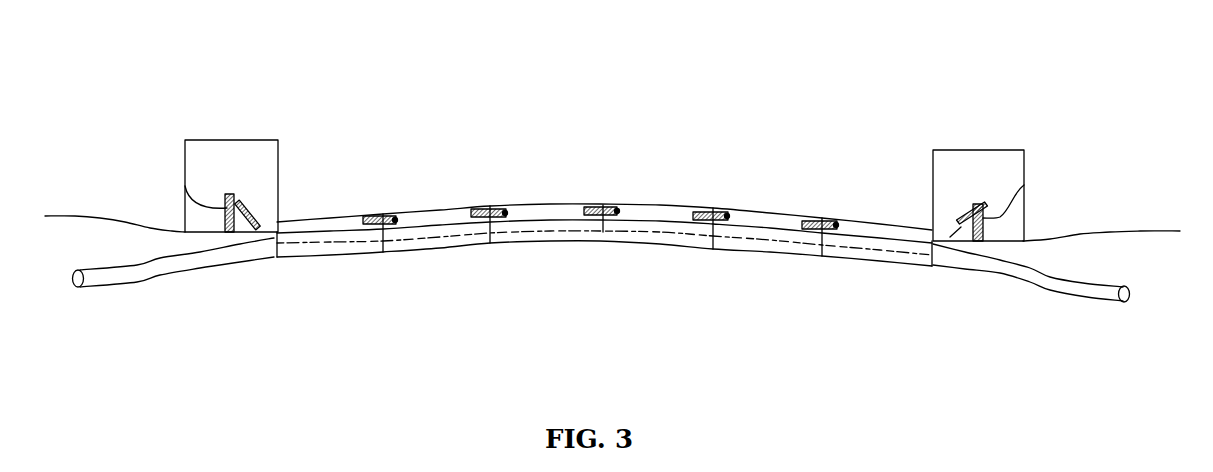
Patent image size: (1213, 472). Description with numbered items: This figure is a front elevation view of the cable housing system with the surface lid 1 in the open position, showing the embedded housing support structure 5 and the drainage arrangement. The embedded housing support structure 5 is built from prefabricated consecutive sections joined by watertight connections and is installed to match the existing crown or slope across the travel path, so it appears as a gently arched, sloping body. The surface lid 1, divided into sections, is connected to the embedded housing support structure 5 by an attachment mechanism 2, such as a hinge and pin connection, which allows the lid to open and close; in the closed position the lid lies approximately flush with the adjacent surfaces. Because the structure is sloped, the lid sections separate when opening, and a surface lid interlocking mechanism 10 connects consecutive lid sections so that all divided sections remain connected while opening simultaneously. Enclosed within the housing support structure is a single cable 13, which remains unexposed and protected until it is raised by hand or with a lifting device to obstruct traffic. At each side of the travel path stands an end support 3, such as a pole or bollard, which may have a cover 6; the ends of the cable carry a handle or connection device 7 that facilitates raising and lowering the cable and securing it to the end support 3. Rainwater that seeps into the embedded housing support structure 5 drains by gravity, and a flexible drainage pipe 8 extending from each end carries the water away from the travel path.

The surface lid 1 is at (540, 205).
The attachment mechanism 2 is at (757, 223).
The end support 3 is at (185, 186).
The embedded housing support structure 5 is at (642, 230).
The cover 6 is at (210, 140).
The handle or connection device 7 is at (247, 203).
The flexible drainage pipe 8 is at (112, 287).
The surface lid interlocking mechanism 10 is at (383, 214).
The single cable 13 is at (737, 250).